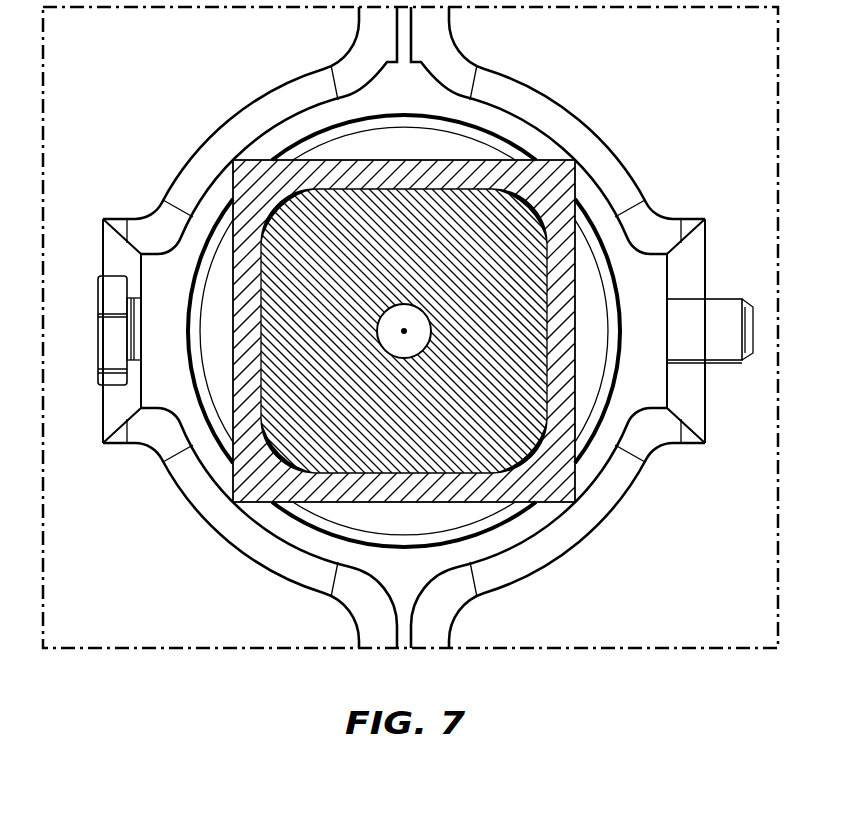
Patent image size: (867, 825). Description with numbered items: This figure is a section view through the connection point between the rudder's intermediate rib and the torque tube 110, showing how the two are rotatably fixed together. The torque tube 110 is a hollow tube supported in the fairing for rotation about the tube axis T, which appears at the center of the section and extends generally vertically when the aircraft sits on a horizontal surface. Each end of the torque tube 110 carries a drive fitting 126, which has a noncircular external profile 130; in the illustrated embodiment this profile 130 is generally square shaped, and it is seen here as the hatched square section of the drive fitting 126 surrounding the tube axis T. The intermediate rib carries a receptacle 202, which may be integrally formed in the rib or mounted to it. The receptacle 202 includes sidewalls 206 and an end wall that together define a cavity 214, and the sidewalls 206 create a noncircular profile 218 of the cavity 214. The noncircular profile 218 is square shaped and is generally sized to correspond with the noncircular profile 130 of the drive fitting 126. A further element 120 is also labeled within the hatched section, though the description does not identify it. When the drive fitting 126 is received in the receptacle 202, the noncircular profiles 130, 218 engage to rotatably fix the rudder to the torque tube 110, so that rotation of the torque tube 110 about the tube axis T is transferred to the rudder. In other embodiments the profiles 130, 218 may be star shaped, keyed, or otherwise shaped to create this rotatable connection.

The receptacle 202 is at (547, 173).
The sidewalls 206 is at (382, 165).
The elastomeric pad 120 is at (503, 278).
The drive fitting 126 is at (500, 345).
The torque tube 110 is at (495, 388).
The cavity 214 is at (527, 458).
The noncircular profile 218 is at (252, 560).
The noncircular profile 130 is at (227, 482).
The tube axis T is at (404, 331).